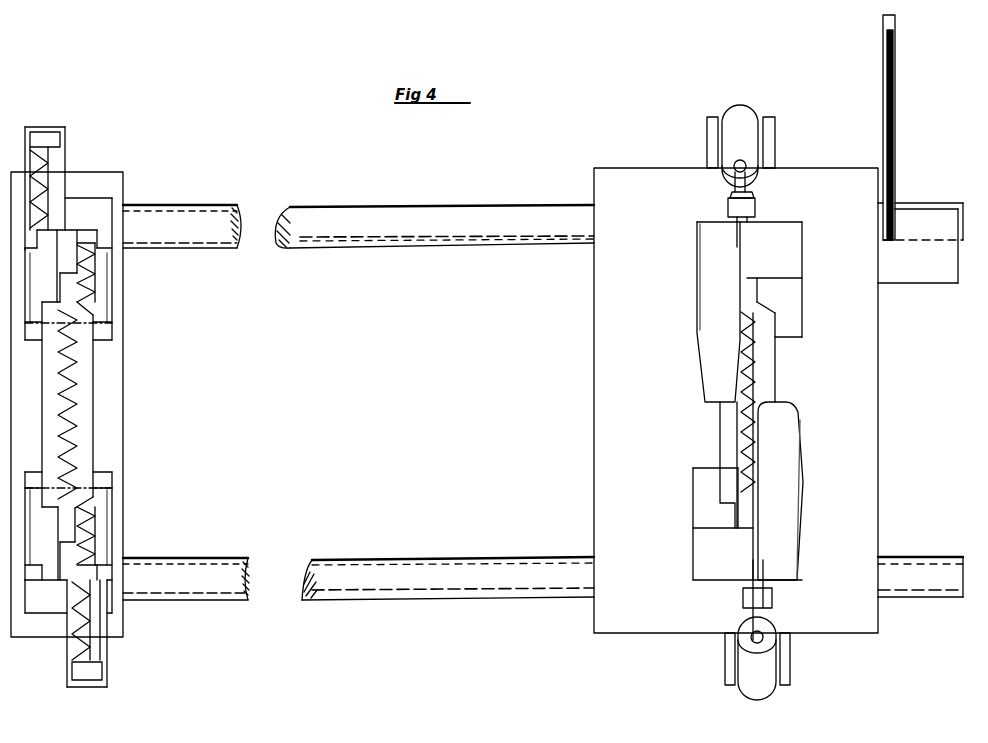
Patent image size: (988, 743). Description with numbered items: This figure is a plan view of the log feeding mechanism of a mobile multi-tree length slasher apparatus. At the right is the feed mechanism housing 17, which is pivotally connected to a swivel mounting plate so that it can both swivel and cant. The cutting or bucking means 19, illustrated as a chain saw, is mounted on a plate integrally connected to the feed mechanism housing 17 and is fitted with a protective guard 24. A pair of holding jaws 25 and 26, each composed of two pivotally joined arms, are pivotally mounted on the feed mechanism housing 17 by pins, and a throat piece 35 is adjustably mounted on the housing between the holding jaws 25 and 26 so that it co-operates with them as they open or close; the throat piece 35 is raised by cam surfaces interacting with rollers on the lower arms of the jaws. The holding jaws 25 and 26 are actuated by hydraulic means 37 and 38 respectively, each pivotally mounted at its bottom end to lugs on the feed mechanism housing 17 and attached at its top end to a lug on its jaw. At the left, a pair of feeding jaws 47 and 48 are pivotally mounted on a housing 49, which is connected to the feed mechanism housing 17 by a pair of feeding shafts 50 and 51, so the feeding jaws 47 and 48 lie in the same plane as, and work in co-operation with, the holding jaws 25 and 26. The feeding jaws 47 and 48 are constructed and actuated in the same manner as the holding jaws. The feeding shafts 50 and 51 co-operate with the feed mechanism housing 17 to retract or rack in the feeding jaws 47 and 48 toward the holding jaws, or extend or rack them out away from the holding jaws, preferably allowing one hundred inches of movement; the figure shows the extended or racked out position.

The feed mechanism housing 17 is at (878, 352).
The cutting or bucking means 19 is at (895, 70).
The protective guard 24 is at (895, 25).
The holding jaw 25 is at (803, 485).
The holding jaw 26 is at (697, 330).
The throat piece 35 is at (765, 357).
The hydraulic means 37 is at (770, 690).
The hydraulic means 38 is at (742, 106).
The feeding jaw 47 is at (107, 645).
The feeding jaw 48 is at (65, 145).
The housing 49 is at (123, 333).
The feeding shaft 50 is at (383, 592).
The feeding shaft 51 is at (396, 207).